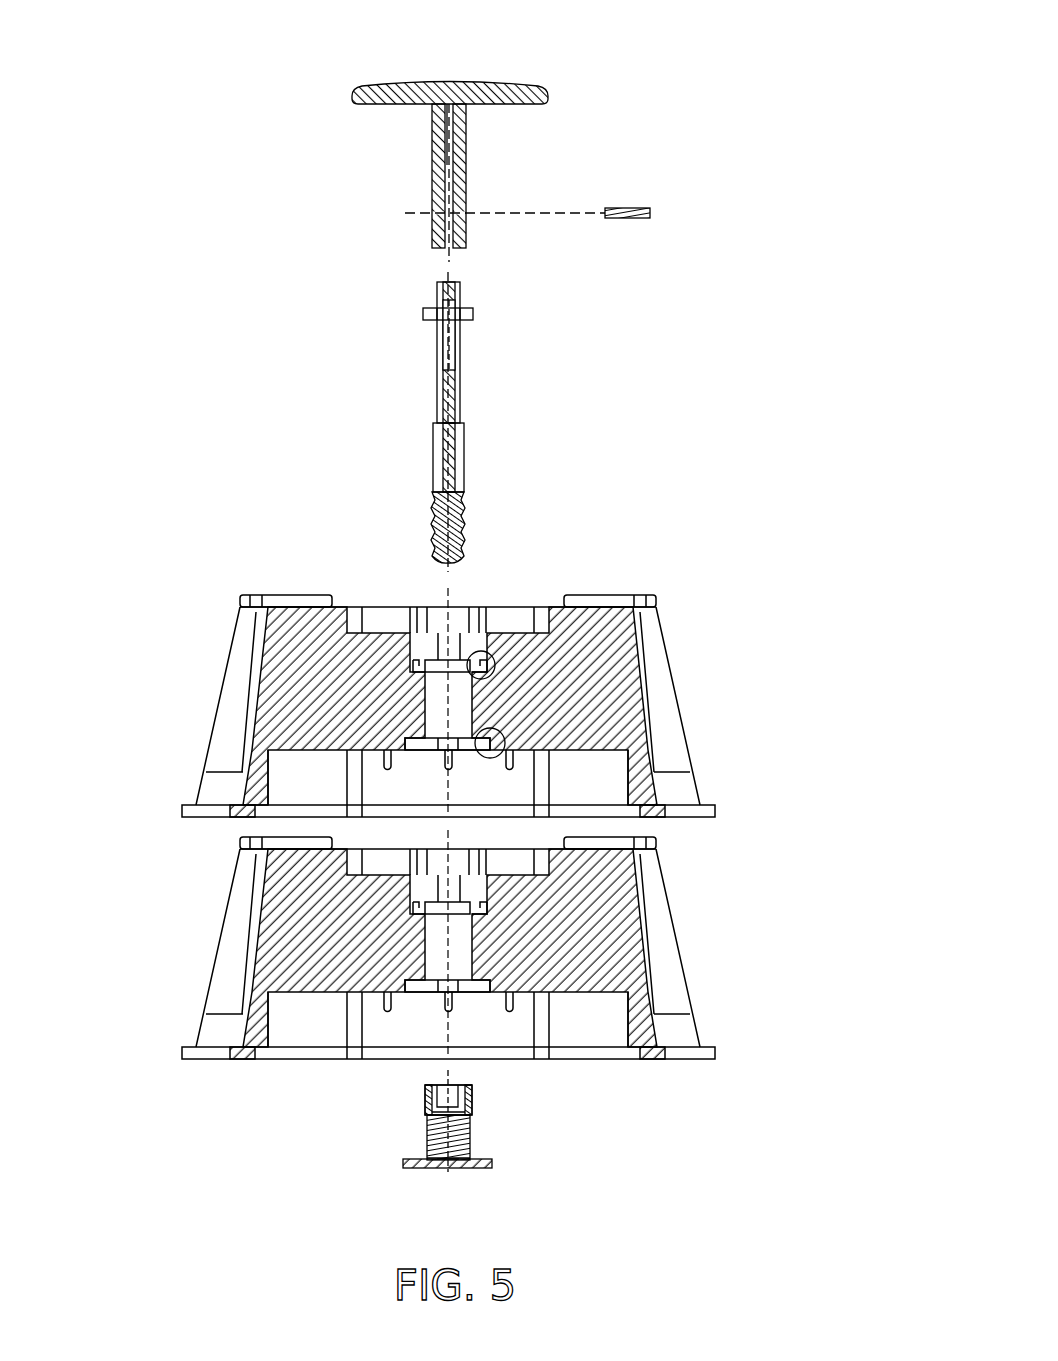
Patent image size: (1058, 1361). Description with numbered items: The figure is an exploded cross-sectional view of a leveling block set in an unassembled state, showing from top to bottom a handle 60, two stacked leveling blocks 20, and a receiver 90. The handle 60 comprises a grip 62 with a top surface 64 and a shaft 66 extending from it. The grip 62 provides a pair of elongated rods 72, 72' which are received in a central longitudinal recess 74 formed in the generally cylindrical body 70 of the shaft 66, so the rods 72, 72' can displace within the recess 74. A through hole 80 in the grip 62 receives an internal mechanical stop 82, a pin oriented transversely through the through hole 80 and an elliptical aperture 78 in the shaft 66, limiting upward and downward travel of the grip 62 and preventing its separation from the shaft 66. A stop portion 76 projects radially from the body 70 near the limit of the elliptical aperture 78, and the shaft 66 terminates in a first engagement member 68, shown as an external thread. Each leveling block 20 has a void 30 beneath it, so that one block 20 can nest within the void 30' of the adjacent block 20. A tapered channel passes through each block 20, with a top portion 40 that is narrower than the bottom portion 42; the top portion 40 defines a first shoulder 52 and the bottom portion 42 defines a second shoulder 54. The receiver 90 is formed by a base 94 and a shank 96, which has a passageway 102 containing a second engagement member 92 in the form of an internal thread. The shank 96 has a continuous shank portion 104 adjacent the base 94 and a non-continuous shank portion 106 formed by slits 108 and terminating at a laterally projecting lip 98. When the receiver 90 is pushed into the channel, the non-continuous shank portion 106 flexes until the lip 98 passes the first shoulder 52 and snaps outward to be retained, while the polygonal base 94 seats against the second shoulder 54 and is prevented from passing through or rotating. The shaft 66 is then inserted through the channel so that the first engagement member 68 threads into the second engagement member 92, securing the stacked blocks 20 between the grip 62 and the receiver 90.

The leveling block 20 is at (165, 665).
The void 30 is at (473, 1075).
The void 30' is at (569, 795).
The top portion 40 is at (472, 916).
The bottom portion 42 is at (472, 980).
The first shoulder 52 is at (497, 665).
The second shoulder 54 is at (507, 745).
The handle 60 is at (244, 76).
The grip 62 is at (452, 142).
The top surface 64 is at (386, 83).
The shaft 66 is at (439, 422).
The first engagement member 68 is at (468, 531).
The cylindrical body 70 is at (461, 406).
The rod 72 is at (393, 186).
The rod 72' is at (500, 182).
The central longitudinal recess 74 is at (465, 424).
The stop portion 76 is at (474, 314).
The elliptical aperture 78 is at (452, 392).
The through hole 80 is at (470, 211).
The internal mechanical stop 82 is at (633, 208).
The receiver 90 is at (267, 1160).
The second engagement member 92 is at (450, 1168).
The base 94 is at (492, 1165).
The shank 96 is at (469, 1149).
The lip 98 is at (469, 1088).
The passageway 102 is at (441, 1174).
The continuous shank portion 104 is at (405, 1117).
The non-continuous shank portion 106 is at (405, 1086).
The slit 108 is at (447, 1086).